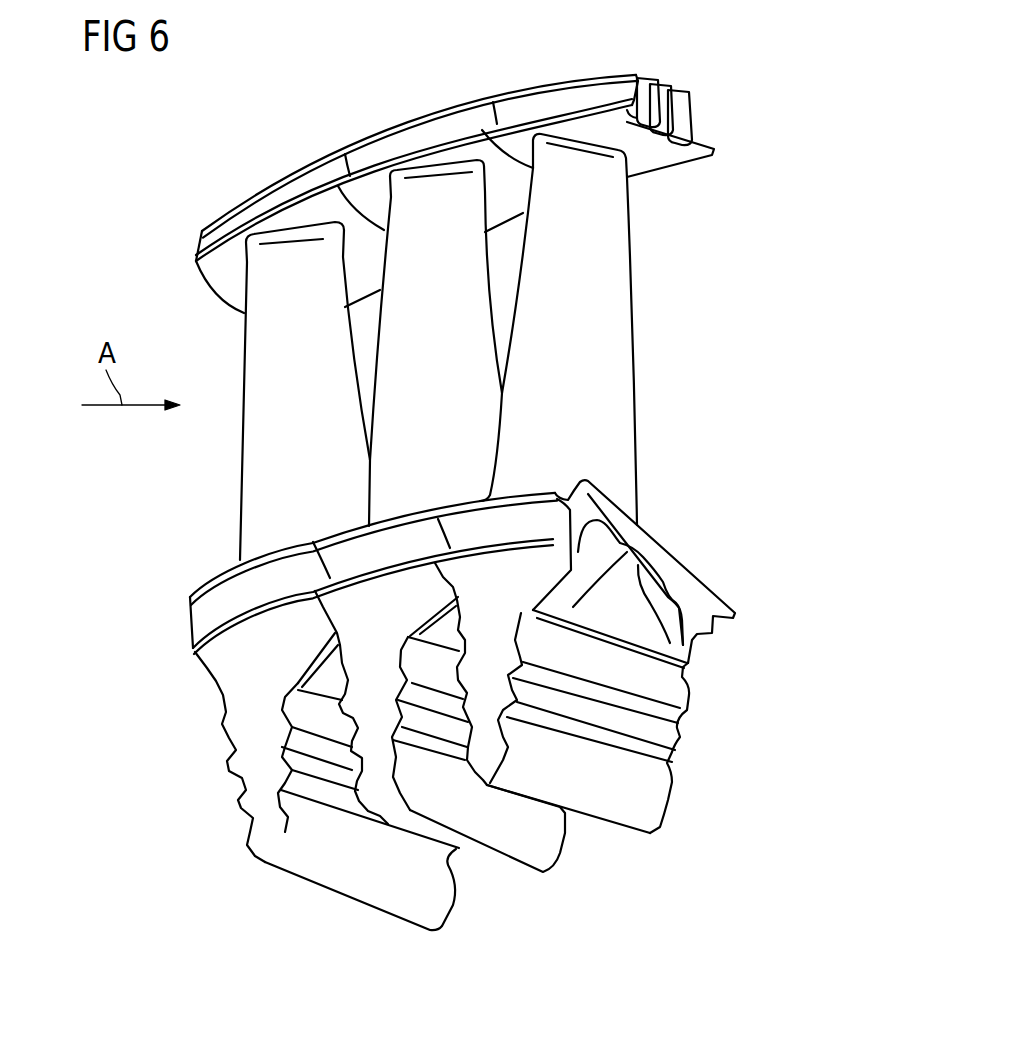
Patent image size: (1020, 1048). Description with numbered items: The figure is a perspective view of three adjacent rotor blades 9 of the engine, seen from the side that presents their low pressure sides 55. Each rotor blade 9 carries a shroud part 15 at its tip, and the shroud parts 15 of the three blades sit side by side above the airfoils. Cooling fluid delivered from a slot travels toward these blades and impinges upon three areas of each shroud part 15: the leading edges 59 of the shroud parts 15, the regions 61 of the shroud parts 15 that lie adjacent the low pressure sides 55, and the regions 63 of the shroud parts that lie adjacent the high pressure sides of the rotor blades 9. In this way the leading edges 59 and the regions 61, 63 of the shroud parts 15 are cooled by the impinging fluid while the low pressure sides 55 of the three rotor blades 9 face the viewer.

The rotor blade 9 is at (254, 463).
The shroud part 15 is at (362, 124).
The low pressure side 55 is at (319, 507).
The leading edge 59 is at (400, 160).
The region of shroud part adjacent low pressure side 61 is at (342, 222).
The region of shroud part adjacent high pressure side 63 is at (236, 273).